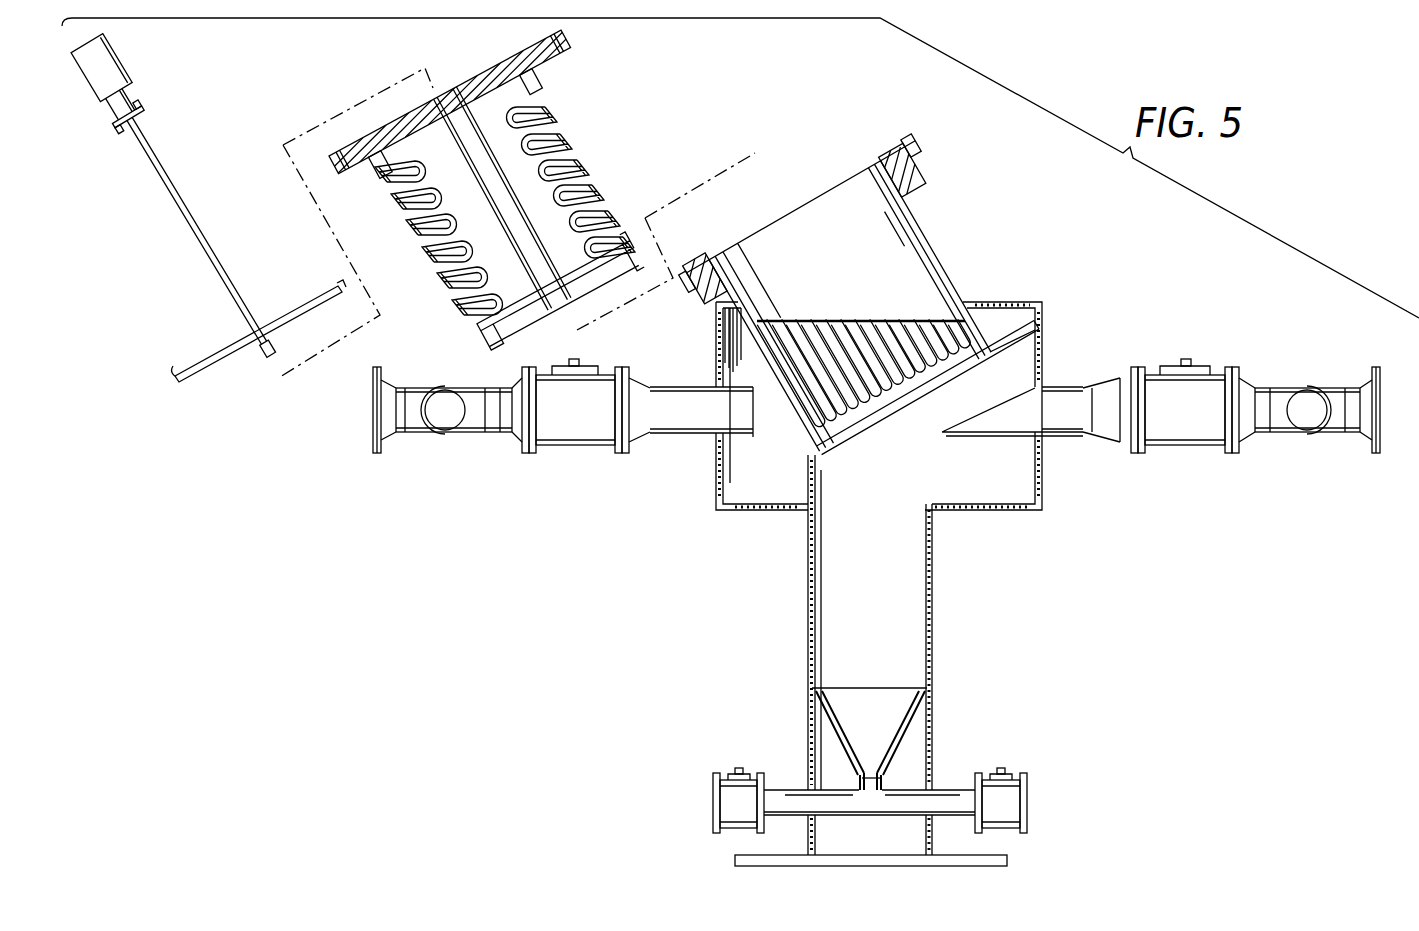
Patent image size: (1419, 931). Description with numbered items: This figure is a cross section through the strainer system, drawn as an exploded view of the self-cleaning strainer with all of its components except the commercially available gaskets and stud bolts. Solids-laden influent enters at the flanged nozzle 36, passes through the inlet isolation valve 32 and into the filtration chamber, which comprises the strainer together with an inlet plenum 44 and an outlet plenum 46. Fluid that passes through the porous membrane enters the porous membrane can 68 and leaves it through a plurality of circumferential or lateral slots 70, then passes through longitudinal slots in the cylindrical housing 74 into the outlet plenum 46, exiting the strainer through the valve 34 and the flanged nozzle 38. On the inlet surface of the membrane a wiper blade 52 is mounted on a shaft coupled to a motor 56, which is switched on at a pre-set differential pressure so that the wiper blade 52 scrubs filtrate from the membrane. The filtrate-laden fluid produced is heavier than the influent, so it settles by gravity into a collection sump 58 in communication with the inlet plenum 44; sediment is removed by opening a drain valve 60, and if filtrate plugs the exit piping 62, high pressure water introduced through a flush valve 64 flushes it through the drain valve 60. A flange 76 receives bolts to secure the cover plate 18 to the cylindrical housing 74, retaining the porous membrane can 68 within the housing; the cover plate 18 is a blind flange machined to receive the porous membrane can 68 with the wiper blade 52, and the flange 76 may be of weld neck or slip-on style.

The cover plate 18 is at (548, 52).
The inlet isolation valve 32 is at (1188, 440).
The valve 34 is at (552, 452).
The flanged nozzle 36 is at (1382, 438).
The flanged nozzle 38 is at (373, 430).
The inlet plenum 44 is at (938, 488).
The outlet plenum 46 is at (738, 483).
The wiper blade 52 is at (297, 315).
The motor 56 is at (120, 76).
The collection sump 58 is at (893, 710).
The drain valve 60 is at (1010, 770).
The exit piping 62 is at (872, 802).
The flush valve 64 is at (730, 768).
The porous membrane can 68 is at (568, 136).
The circumferential or lateral slots 70 is at (597, 184).
The cylindrical housing 74 is at (927, 240).
The flange 76 is at (898, 172).